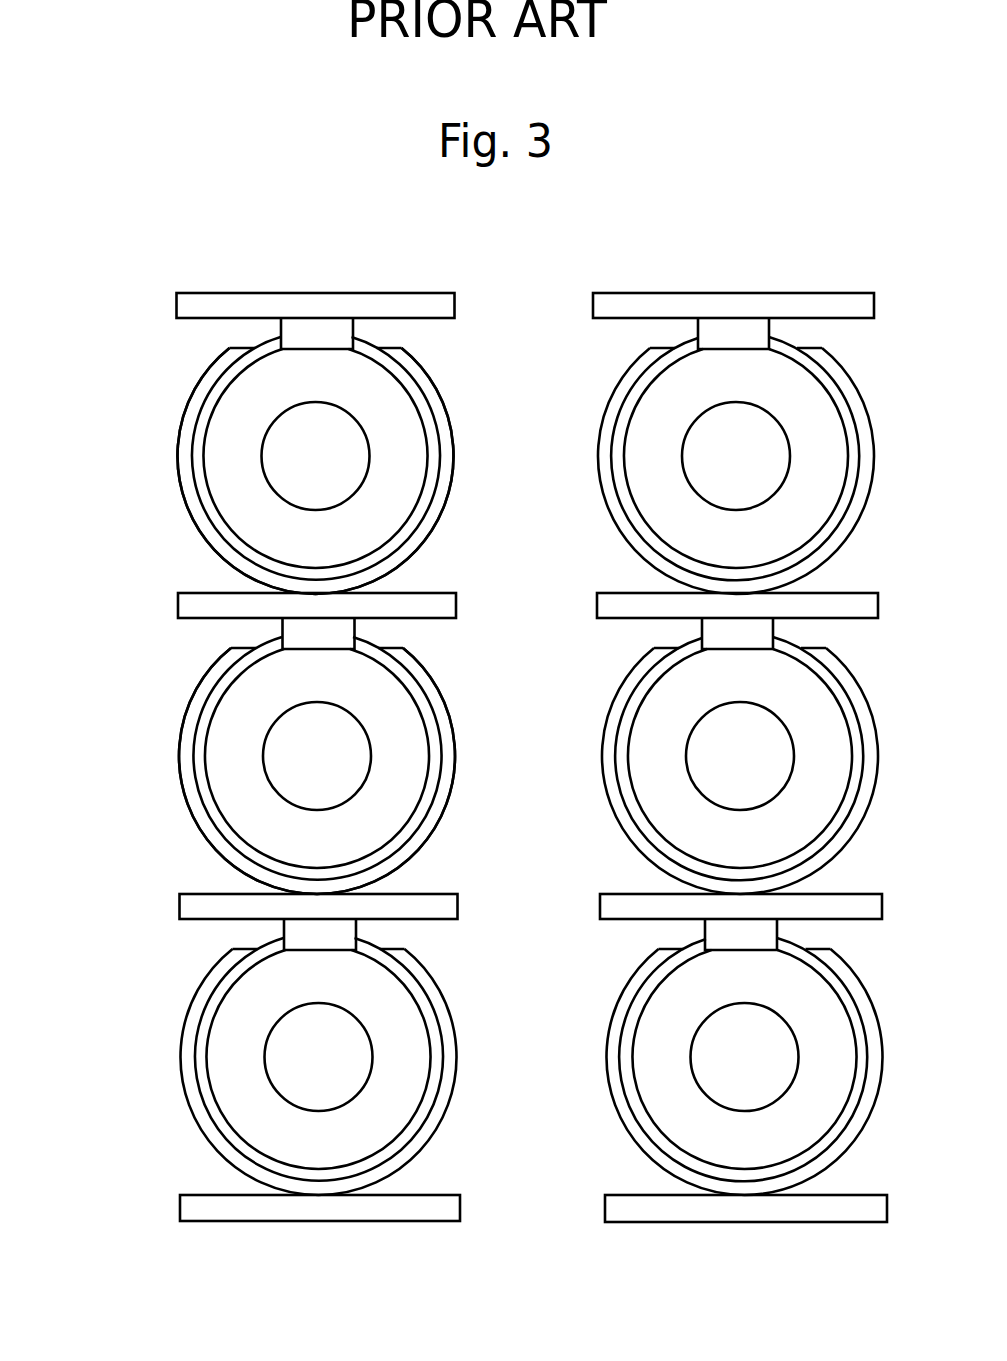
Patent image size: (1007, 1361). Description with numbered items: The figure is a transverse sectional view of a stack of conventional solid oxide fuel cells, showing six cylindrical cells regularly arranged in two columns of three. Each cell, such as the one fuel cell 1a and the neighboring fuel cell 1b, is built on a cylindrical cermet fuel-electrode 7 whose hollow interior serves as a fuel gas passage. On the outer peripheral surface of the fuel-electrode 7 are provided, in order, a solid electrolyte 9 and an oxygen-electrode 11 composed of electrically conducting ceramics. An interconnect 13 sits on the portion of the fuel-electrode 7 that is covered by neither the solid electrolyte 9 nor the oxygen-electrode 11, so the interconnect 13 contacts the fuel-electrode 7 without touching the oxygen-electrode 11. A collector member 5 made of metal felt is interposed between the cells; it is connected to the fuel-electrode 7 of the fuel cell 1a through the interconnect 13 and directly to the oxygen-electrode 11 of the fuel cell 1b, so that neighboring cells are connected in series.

The collector member 5 is at (374, 302).
The interconnect 13 is at (281, 326).
The oxygen-electrode 11 is at (430, 382).
The solid electrolyte 9 is at (438, 452).
The fuel-electrode 7 is at (403, 498).
The fuel cell 1b is at (176, 440).
The fuel cell 1a is at (177, 758).